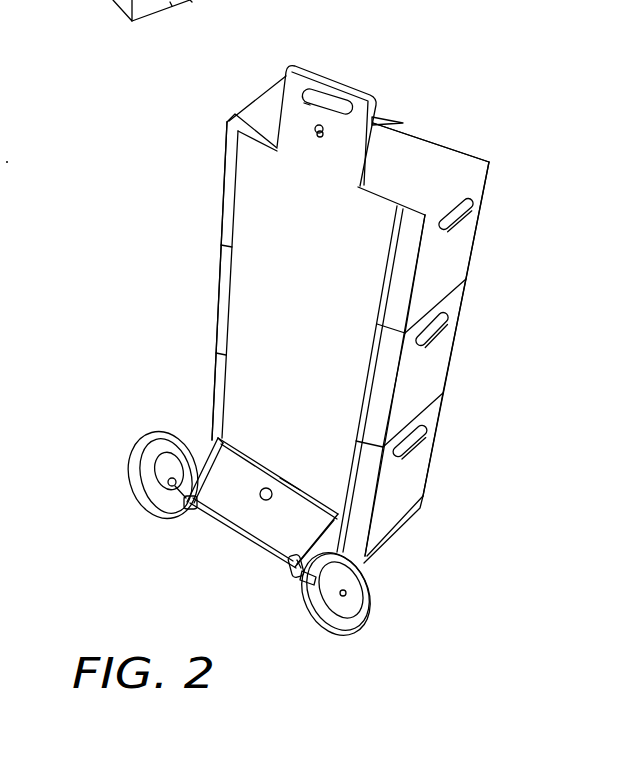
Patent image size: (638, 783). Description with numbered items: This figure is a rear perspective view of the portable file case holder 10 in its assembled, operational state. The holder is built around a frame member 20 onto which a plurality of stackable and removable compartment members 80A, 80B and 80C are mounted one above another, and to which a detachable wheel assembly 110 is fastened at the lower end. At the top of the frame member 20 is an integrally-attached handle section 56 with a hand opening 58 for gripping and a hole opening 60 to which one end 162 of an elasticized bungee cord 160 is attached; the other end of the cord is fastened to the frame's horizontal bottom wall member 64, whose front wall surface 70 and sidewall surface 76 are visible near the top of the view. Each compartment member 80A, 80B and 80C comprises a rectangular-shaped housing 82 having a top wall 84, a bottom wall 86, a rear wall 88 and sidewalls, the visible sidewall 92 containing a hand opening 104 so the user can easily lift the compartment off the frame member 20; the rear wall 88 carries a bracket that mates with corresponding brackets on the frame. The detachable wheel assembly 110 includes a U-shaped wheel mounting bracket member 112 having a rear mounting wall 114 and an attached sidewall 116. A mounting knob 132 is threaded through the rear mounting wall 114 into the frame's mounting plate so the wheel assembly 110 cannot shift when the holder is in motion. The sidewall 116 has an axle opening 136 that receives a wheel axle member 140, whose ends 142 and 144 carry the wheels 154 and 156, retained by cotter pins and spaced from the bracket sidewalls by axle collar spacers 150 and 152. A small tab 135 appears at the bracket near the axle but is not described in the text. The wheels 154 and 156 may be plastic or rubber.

The portable file case holder 10 is at (434, 54).
The frame member 20 is at (272, 197).
The handle section 56 is at (320, 66).
The hand opening 58 is at (303, 95).
The hole opening 60 is at (330, 104).
The horizontal bottom wall member 64 is at (120, 14).
The front wall surface 70 is at (173, 1).
The sidewall surface 76 is at (82, 10).
The bottom wall 86 is at (216, 11).
The compartment member 80A is at (450, 137).
The compartment member 80B is at (468, 302).
The compartment member 80C is at (444, 413).
The rectangular-shaped housing 82 is at (227, 121).
The top wall 84 is at (401, 148).
The rear wall 88 is at (410, 247).
The sidewall 92 is at (459, 244).
The hand opening 104 is at (462, 210).
The detachable wheel assembly 110 is at (219, 556).
The U-shaped wheel mounting bracket member 112 is at (234, 446).
The rear mounting wall 114 is at (301, 502).
The sidewall 116 is at (188, 508).
The mounting knob 132 is at (265, 487).
The axle mounting tab 135 is at (295, 556).
The axle opening 136 is at (198, 500).
The wheel axle member 140 is at (247, 530).
The axle end 142 is at (160, 452).
The axle end 144 is at (364, 588).
The axle collar spacer 150 is at (183, 502).
The axle collar spacer 152 is at (306, 579).
The wheel 154 is at (140, 470).
The wheel 156 is at (313, 602).
The elasticized (bungee) cord 160 is at (382, 117).
The cord end 162 is at (321, 138).